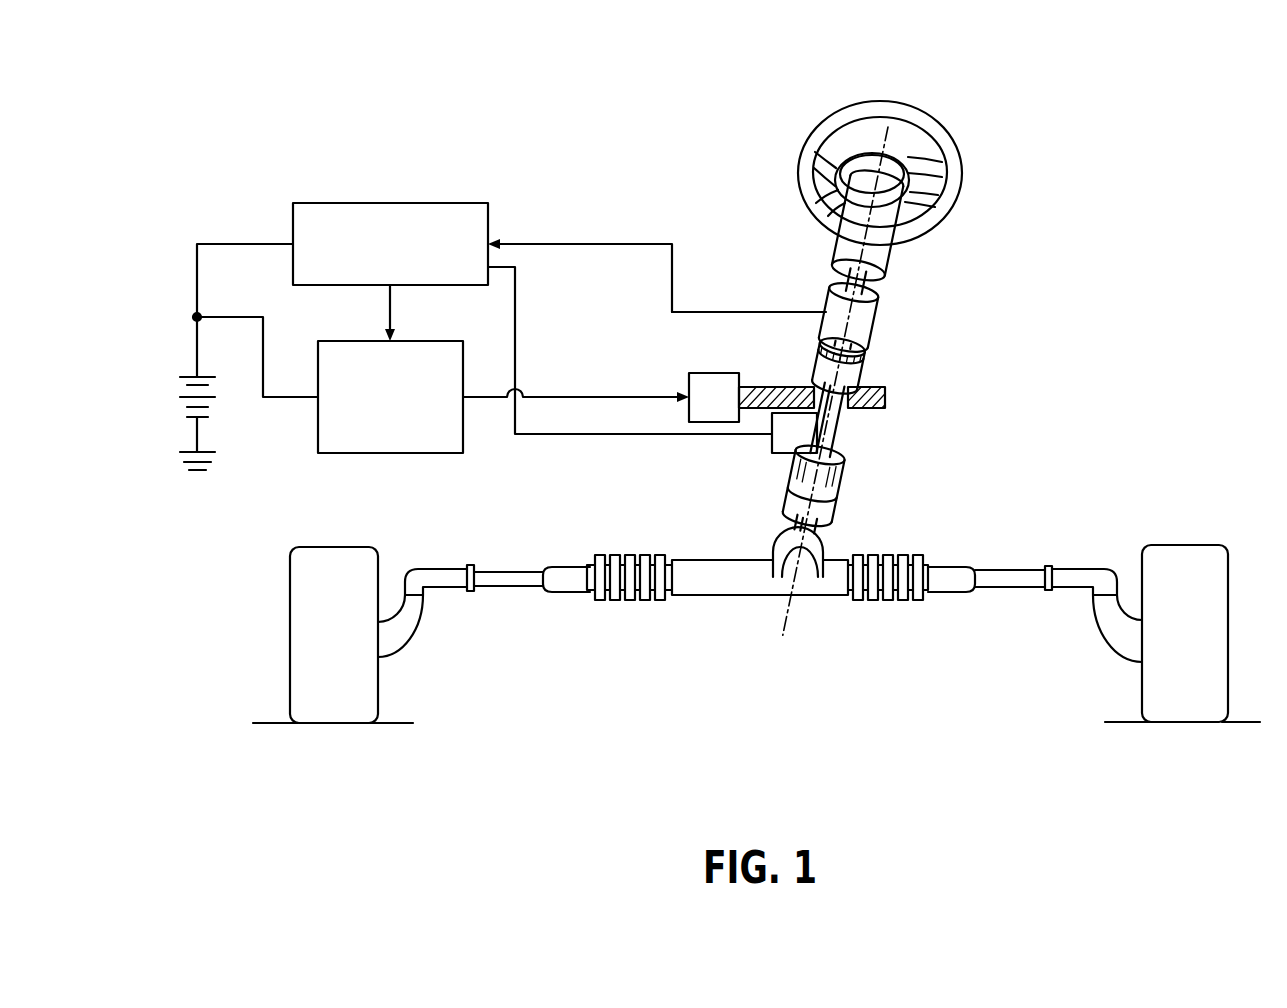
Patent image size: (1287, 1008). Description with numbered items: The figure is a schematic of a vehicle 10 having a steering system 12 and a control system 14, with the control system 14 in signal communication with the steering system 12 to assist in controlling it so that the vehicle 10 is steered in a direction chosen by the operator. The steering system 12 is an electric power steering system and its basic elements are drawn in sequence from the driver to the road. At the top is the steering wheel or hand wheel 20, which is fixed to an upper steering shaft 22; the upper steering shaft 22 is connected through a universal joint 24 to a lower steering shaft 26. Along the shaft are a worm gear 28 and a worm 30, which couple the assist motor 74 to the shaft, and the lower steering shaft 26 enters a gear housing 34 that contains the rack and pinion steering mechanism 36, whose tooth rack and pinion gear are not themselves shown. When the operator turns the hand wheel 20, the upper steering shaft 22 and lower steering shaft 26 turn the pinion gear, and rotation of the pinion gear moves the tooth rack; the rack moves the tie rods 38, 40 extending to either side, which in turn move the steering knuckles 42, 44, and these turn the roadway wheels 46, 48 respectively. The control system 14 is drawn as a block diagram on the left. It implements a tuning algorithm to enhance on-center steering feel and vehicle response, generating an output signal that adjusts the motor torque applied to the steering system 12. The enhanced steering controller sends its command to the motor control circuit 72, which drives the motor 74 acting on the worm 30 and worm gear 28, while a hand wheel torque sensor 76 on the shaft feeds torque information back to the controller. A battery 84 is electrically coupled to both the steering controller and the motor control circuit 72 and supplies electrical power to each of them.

The vehicle 10 is at (1180, 136).
The steering system 12 is at (1043, 222).
The control system 14 is at (319, 173).
The hand wheel 20 is at (925, 110).
The upper steering shaft 22 is at (866, 232).
The universal joint 24 is at (813, 485).
The lower steering shaft 26 is at (820, 530).
The worm gear 28 is at (839, 366).
The worm 30 is at (885, 396).
The gear housing 34 is at (775, 543).
The steering mechanism 36 is at (920, 557).
The tie rod 38 is at (509, 568).
The tie rod 40 is at (1012, 578).
The steering knuckle 42 is at (423, 640).
The steering knuckle 44 is at (1105, 640).
The roadway wheel 46 is at (312, 627).
The roadway wheel 48 is at (1188, 557).
The motor control circuit 72 is at (390, 453).
The motor 74 is at (714, 373).
The hand wheel torque sensor 76 is at (772, 445).
The battery 84 is at (188, 377).